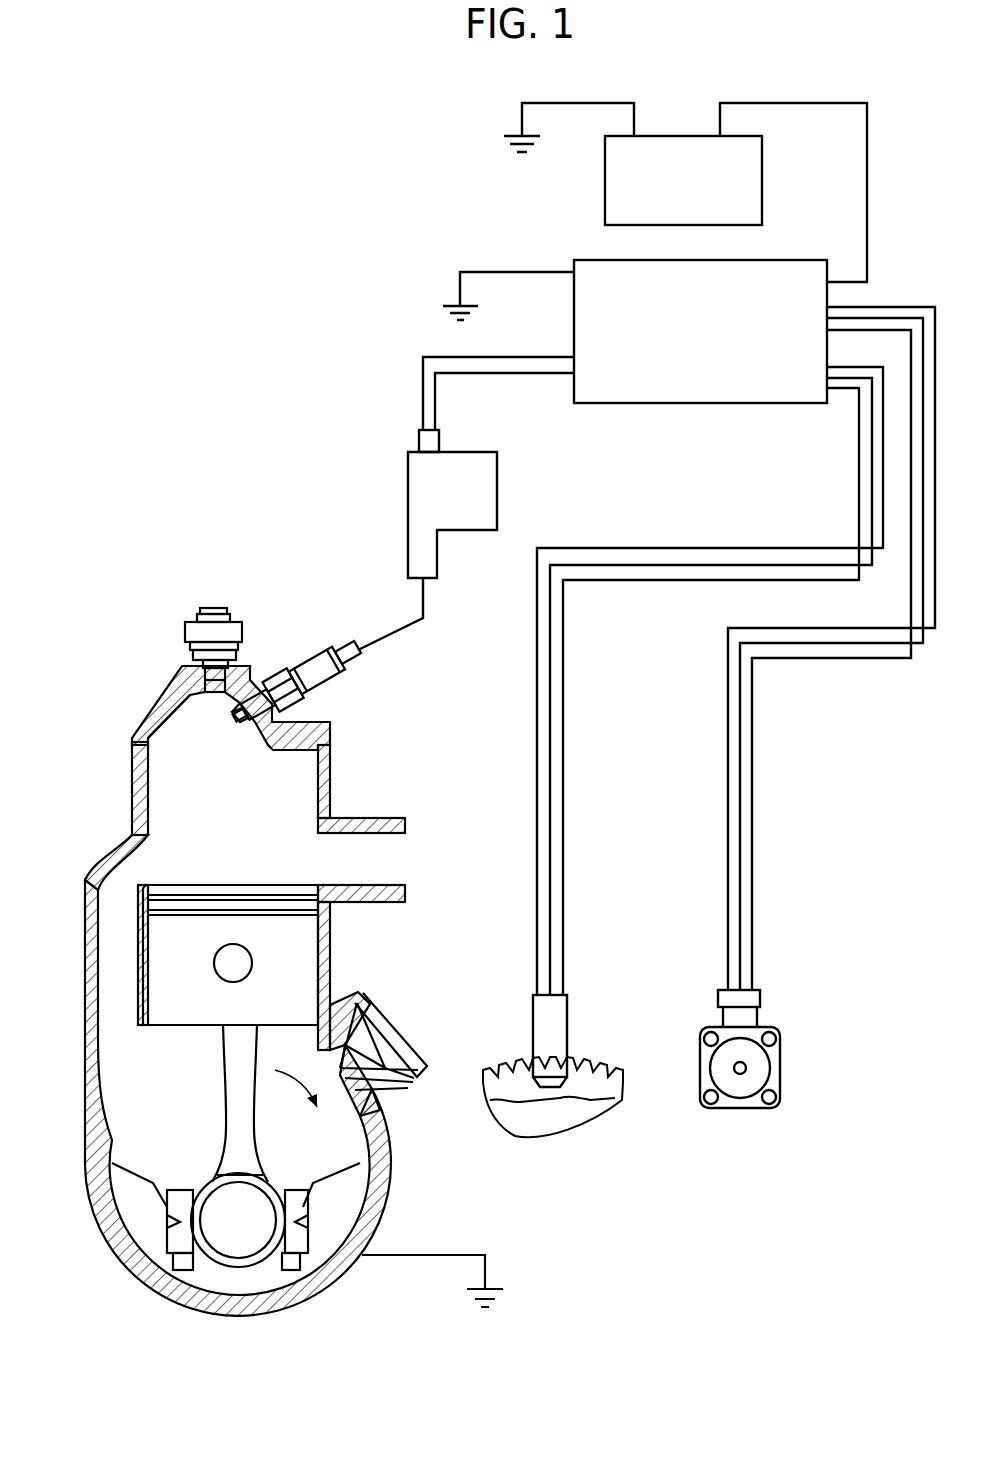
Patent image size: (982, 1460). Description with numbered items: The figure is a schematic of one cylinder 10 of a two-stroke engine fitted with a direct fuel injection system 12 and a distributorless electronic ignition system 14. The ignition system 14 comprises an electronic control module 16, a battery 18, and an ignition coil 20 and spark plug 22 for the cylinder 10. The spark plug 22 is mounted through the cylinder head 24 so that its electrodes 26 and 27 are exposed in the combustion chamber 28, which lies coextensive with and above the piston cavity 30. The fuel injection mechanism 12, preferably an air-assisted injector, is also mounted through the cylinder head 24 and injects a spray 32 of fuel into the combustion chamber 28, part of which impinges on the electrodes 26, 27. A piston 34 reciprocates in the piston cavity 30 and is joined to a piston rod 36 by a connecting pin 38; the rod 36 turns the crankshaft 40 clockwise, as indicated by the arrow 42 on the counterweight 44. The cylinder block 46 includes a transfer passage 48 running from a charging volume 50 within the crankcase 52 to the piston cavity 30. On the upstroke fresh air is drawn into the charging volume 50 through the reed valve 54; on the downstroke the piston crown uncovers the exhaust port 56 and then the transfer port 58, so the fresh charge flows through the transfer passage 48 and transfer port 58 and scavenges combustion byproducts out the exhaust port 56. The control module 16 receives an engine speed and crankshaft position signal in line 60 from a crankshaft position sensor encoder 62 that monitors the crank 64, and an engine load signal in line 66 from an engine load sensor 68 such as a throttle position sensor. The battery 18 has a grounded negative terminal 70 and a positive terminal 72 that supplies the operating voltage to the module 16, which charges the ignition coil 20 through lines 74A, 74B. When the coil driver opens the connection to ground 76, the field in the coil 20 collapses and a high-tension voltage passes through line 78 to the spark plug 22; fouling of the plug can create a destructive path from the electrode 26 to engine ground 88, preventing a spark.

The cylinder 10 is at (88, 774).
The direct fuel injection system 12 is at (218, 606).
The distributorless electronic ignition system 14 is at (366, 279).
The electronic control module 16 is at (574, 262).
The battery 18 is at (682, 136).
The ignition coil 20 is at (408, 476).
The spark plug 22 is at (306, 660).
The cylinder head 24 is at (247, 672).
The spark plug electrode 26 is at (238, 730).
The spark plug electrode 27 is at (268, 710).
The combustion chamber 28 is at (165, 724).
The piston cavity 30 is at (240, 840).
The spray of fuel 32 is at (186, 702).
The piston 34 is at (160, 930).
The piston rod 36 is at (228, 1100).
The connecting pin 38 is at (232, 962).
The crankshaft 40 is at (252, 1234).
The arrow 42 is at (296, 1101).
The counterweight 44 is at (328, 1172).
The cylinder block 46 is at (85, 866).
The transfer passage 48 is at (100, 958).
The charging volume 50 is at (133, 1233).
The crankcase 52 is at (135, 1265).
The reed valve 54 is at (362, 1000).
The exhaust port 56 is at (332, 830).
The transfer port 58 is at (125, 850).
The line 60 is at (617, 547).
The crankshaft position sensor encoder 62 is at (567, 1015).
The crank 64 is at (625, 1105).
The line 66 is at (752, 747).
The engine load sensor 68 is at (755, 1020).
The negative terminal 70 is at (633, 135).
The positive terminal 72 is at (722, 135).
The line 74A is at (437, 416).
The line 74B is at (423, 376).
The ground 76 is at (460, 290).
The line 78 is at (423, 618).
The engine ground 88 is at (505, 1289).